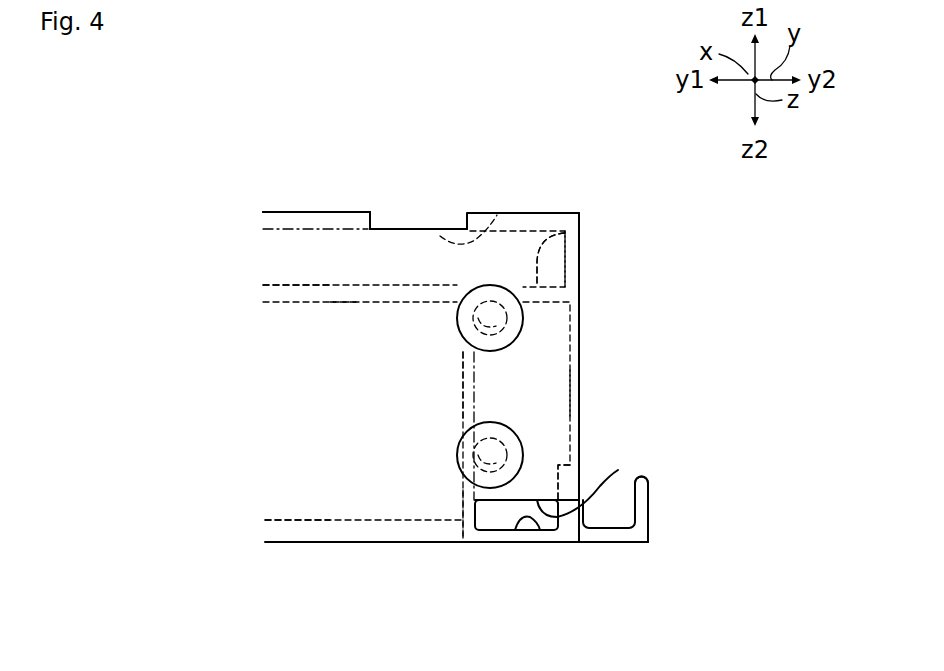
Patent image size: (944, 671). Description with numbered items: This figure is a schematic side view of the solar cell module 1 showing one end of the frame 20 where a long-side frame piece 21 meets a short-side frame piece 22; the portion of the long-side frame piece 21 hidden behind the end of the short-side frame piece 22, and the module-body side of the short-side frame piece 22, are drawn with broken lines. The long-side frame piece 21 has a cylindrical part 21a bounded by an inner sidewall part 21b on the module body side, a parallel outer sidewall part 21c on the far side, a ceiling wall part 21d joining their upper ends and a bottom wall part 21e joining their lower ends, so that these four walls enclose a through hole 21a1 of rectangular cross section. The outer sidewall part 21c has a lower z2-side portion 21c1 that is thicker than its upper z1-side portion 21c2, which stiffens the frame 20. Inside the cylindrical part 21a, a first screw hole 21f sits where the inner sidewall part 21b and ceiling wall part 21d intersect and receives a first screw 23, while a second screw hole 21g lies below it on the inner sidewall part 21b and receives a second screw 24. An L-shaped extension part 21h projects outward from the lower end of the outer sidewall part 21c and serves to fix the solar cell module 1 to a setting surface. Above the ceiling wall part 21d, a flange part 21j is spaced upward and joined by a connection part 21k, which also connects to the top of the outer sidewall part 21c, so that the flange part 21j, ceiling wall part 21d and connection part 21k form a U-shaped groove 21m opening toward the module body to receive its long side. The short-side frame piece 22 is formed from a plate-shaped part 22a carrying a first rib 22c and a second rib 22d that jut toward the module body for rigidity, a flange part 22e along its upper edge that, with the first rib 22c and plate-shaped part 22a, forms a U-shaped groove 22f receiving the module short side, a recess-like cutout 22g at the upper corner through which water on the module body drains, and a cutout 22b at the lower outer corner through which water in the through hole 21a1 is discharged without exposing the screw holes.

The solar cell module 1 is at (544, 111).
The frame 20 is at (268, 210).
The long-side frame piece 21 is at (618, 544).
The cylindrical part 21a is at (581, 371).
The through hole 21a1 is at (520, 545).
The inner sidewall part 21b is at (462, 406).
The outer sidewall part 21c is at (582, 331).
The z2-side portion 21c1 is at (562, 486).
The z1-side portion 21c2 is at (582, 392).
The ceiling wall part 21d is at (578, 212).
The bottom wall part 21e is at (555, 545).
The first screw hole 21f is at (464, 328).
The second screw hole 21g is at (464, 474).
The extension part 21h is at (650, 505).
The flange part 21j is at (527, 212).
The connection part 21k is at (581, 253).
The groove 21m is at (440, 236).
The short-side frame piece 22 is at (415, 543).
The plate-shaped part 22a is at (289, 500).
The cutout 22b is at (618, 473).
The first rib 22c is at (300, 285).
The second rib 22d is at (351, 543).
The flange part 22e is at (290, 211).
The groove 22f is at (343, 288).
The cutout 22g is at (372, 222).
The first screw 23 is at (467, 293).
The second screw 24 is at (462, 456).